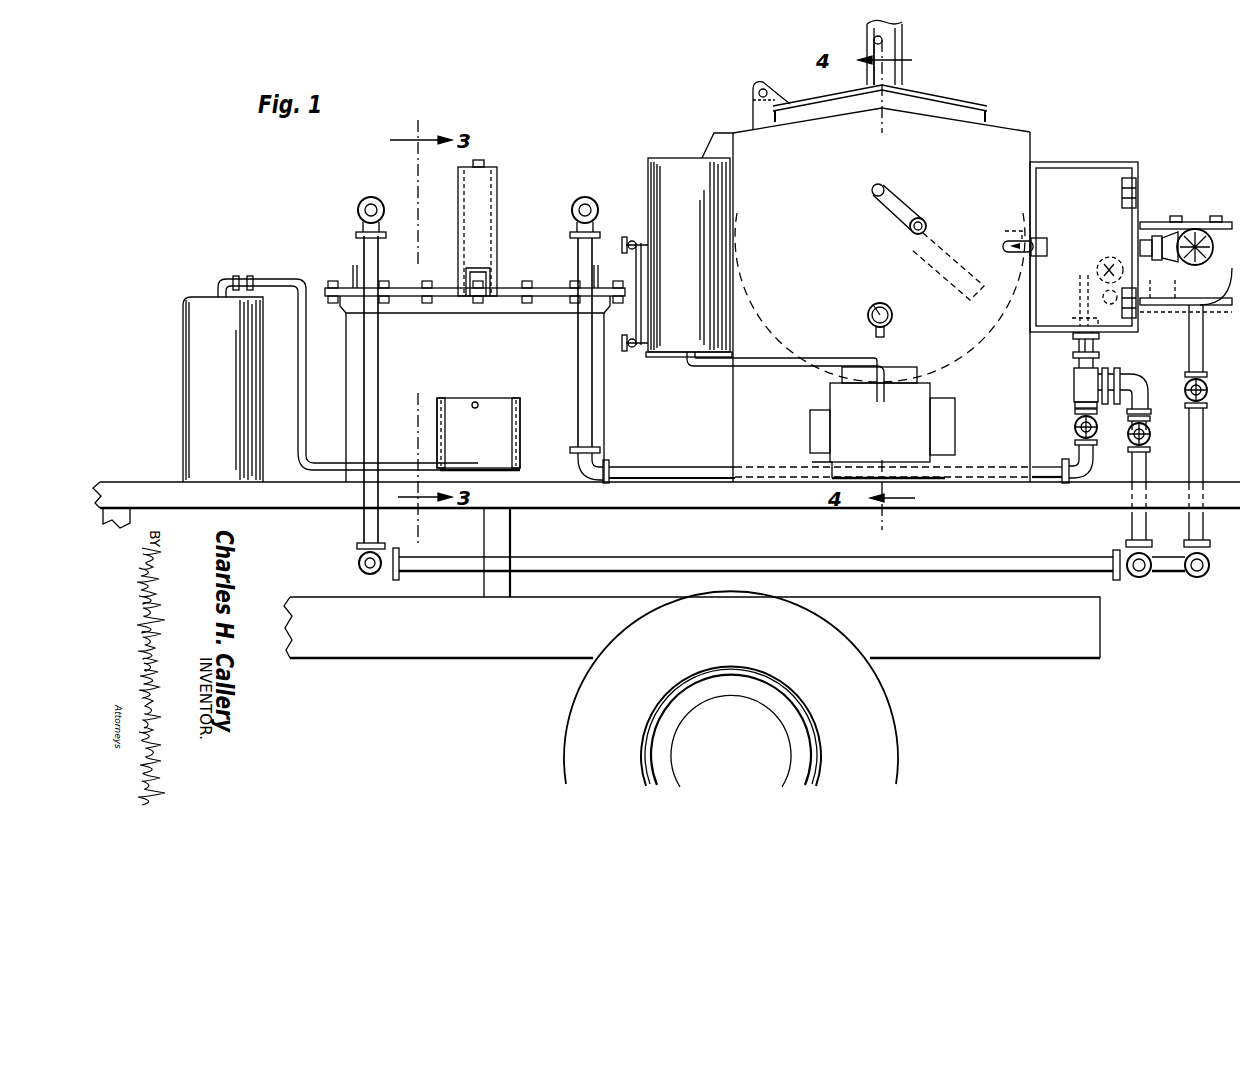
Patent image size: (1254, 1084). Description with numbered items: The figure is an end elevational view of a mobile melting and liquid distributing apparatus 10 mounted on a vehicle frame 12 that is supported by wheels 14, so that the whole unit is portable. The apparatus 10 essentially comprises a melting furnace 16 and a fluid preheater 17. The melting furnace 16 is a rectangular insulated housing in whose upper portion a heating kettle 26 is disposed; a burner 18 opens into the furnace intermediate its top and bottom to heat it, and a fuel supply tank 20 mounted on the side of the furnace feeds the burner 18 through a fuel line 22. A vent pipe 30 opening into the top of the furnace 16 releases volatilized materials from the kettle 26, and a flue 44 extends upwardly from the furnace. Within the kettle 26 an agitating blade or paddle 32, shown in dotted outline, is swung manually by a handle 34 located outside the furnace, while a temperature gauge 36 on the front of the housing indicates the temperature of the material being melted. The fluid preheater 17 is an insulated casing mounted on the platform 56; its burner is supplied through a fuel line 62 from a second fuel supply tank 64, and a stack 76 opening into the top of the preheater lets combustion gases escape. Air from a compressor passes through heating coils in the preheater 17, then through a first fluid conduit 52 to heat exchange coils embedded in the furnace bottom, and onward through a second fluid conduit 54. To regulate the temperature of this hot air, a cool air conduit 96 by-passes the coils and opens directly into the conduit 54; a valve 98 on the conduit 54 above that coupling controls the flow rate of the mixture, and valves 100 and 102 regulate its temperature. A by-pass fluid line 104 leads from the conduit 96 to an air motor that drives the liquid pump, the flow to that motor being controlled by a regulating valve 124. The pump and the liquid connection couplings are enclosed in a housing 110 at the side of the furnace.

The mobile melting and distributing apparatus 10 is at (677, 234).
The vehicle frame 12 is at (965, 658).
The wheels 14 is at (888, 773).
The melting furnace 16 is at (980, 140).
The fluid preheater 17 is at (549, 296).
The burner 18 is at (919, 407).
The fuel supply tank 20 is at (680, 172).
The fuel line 22 is at (780, 358).
The heating kettle 26 is at (779, 298).
The vent pipe 30 is at (898, 83).
The agitating blade or paddle 32 is at (955, 265).
The handle 34 is at (906, 214).
The temperature gauge 36 is at (891, 313).
The flue 44 is at (892, 38).
The first fluid conduit 52 is at (666, 471).
The second fluid conduit 54 is at (1076, 405).
The platform 56 is at (680, 508).
The fuel line 62 is at (409, 468).
The fuel supply tank 64 is at (201, 299).
The stack 76 is at (490, 231).
The cool air conduit 96 is at (976, 573).
The valve 98 is at (1099, 346).
The valve 100 is at (1076, 426).
The valve 102 is at (1154, 457).
The by-pass fluid line 104 is at (1195, 443).
The housing 110 is at (1114, 153).
The regulating valve 124 is at (1206, 393).